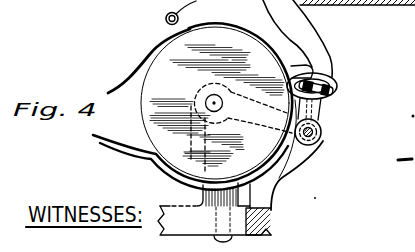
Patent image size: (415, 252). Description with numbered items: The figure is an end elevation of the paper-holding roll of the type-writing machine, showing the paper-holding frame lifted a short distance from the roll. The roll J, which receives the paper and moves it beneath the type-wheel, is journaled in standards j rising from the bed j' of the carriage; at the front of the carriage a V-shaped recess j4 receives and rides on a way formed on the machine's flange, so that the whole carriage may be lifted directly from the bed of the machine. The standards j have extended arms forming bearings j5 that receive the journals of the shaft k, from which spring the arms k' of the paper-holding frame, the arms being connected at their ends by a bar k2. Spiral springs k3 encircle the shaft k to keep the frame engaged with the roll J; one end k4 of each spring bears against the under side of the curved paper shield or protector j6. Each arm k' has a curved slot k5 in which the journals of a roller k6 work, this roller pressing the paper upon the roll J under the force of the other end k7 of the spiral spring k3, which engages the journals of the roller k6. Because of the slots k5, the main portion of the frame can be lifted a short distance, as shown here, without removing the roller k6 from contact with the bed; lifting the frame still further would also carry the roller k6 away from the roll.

The roll J is at (216, 103).
The standards j is at (199, 194).
The bed of the carriage j' is at (214, 224).
The V-shaped recess j4 is at (264, 237).
The bearings j5 is at (324, 144).
The curved paper shield or protector j6 is at (117, 142).
The shaft k is at (318, 121).
The arms of the paper-holding frame k' is at (293, 38).
The bar k2 is at (178, 20).
The spiral springs k3 is at (306, 156).
The end of spiral spring k4 is at (283, 165).
The curved slots k5 is at (343, 92).
The roller k6 is at (309, 68).
The other end of the spiral spring k7 is at (336, 78).